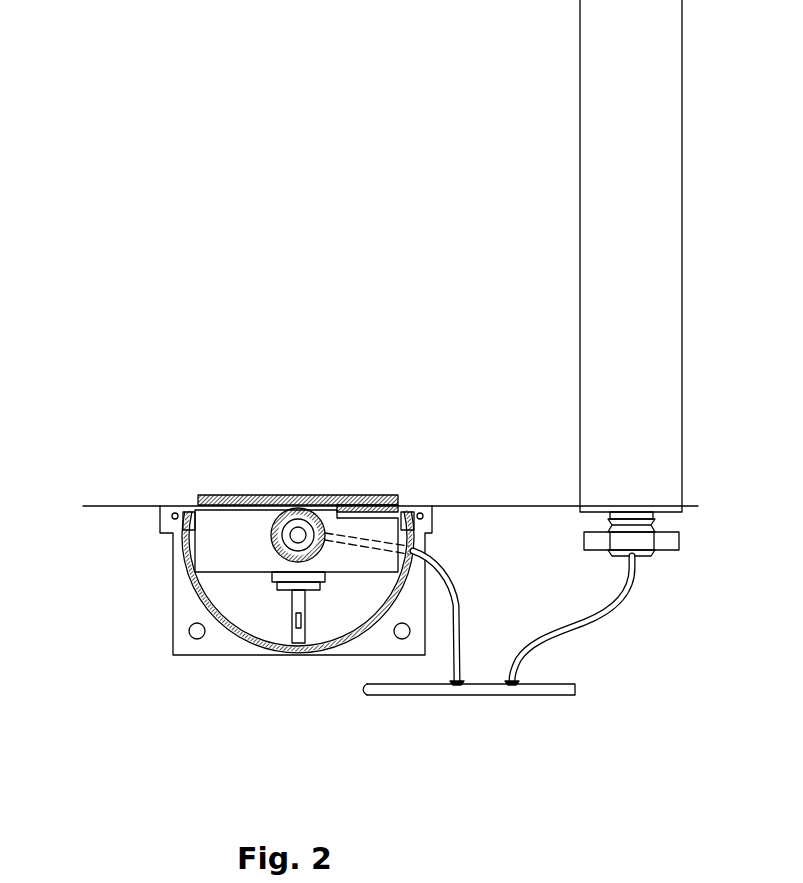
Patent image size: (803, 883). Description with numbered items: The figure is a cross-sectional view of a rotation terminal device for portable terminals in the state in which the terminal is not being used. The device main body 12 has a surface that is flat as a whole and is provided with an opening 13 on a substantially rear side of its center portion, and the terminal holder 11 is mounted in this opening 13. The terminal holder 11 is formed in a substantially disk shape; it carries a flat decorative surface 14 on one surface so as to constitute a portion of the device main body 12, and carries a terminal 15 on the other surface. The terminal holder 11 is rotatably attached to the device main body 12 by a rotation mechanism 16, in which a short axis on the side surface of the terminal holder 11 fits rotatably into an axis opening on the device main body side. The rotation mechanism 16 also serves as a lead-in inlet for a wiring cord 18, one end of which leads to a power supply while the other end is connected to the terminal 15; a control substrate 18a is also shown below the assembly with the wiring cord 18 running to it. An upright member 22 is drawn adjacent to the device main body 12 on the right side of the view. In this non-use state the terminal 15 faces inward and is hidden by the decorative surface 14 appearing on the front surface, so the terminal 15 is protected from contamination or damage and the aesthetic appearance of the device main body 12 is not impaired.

The terminal holder 11 is at (82, 555).
The device main body 12 is at (118, 505).
The opening 13 is at (402, 507).
The decorative surface 14 is at (222, 497).
The terminal 15 is at (287, 620).
The rotation mechanism 16 is at (280, 548).
The wiring cord 18 is at (458, 640).
The control substrate 18a is at (425, 695).
The column 22 is at (596, 58).